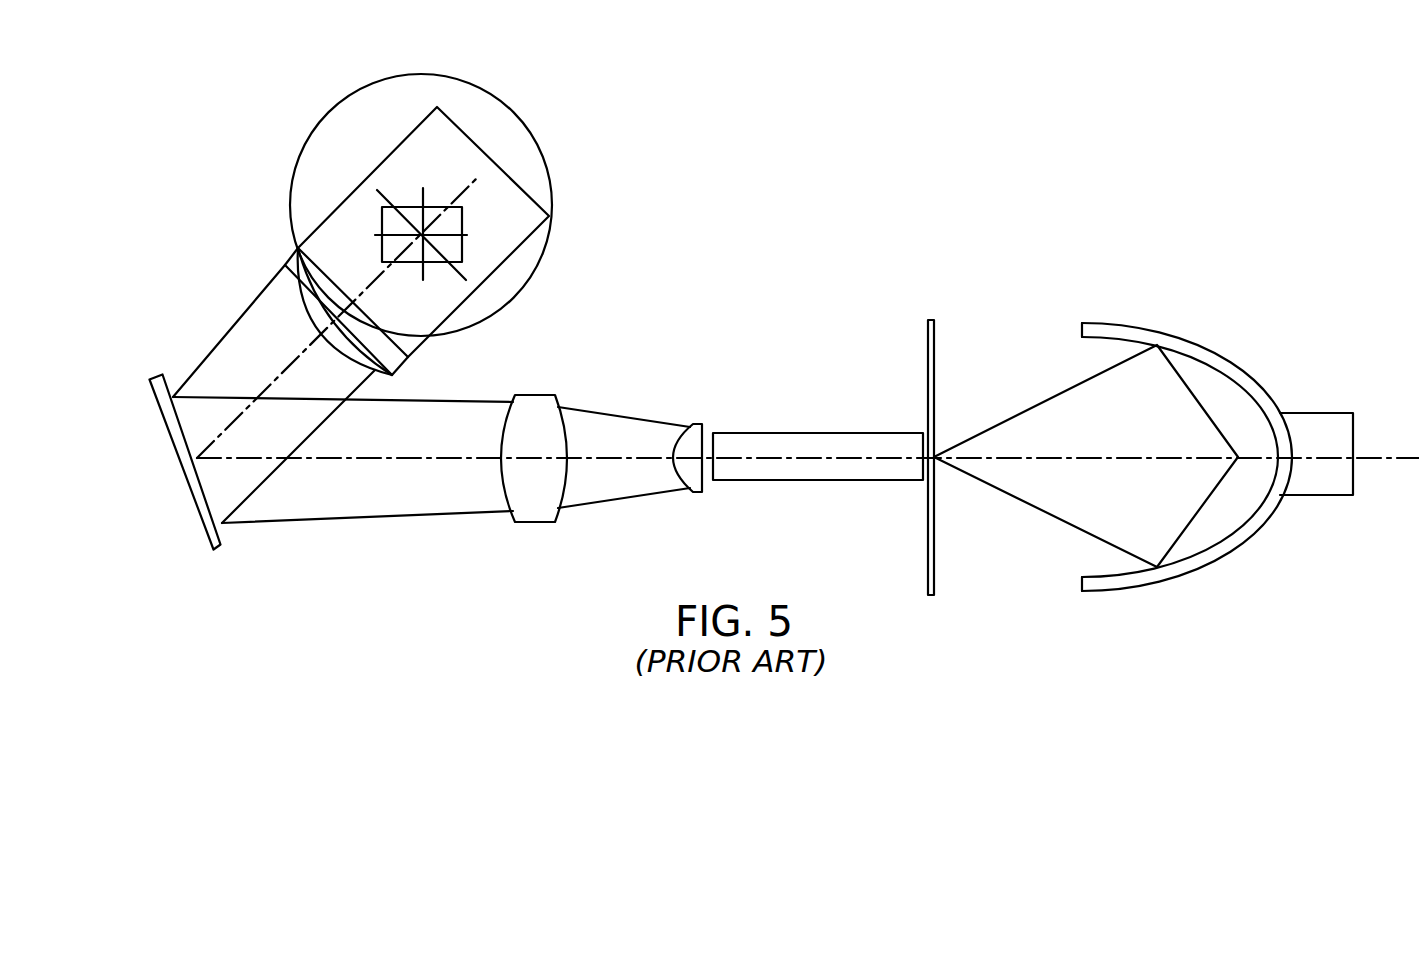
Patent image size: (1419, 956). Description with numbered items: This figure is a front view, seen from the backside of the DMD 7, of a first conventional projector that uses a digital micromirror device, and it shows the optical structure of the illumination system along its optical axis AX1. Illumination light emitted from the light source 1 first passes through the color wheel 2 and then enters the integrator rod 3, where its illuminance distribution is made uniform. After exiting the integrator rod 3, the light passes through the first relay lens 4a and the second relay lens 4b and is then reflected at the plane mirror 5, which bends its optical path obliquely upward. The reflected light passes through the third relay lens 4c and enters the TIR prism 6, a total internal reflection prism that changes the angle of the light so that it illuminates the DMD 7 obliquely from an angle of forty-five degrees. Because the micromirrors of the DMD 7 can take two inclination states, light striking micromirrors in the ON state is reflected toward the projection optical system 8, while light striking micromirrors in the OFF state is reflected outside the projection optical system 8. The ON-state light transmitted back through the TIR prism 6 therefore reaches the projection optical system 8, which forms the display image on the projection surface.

The light source 1 is at (1193, 343).
The color wheel 2 is at (933, 320).
The integrator rod 3 is at (817, 433).
The first relay lens 4a is at (697, 423).
The second relay lens 4b is at (535, 395).
The third relay lens 4c is at (286, 274).
The plane mirror 5 is at (218, 551).
The TIR prism 6 is at (337, 207).
The DMD 7 is at (462, 250).
The projection optical system 8 is at (533, 132).
The optical axis of the illumination system AX1 is at (380, 461).